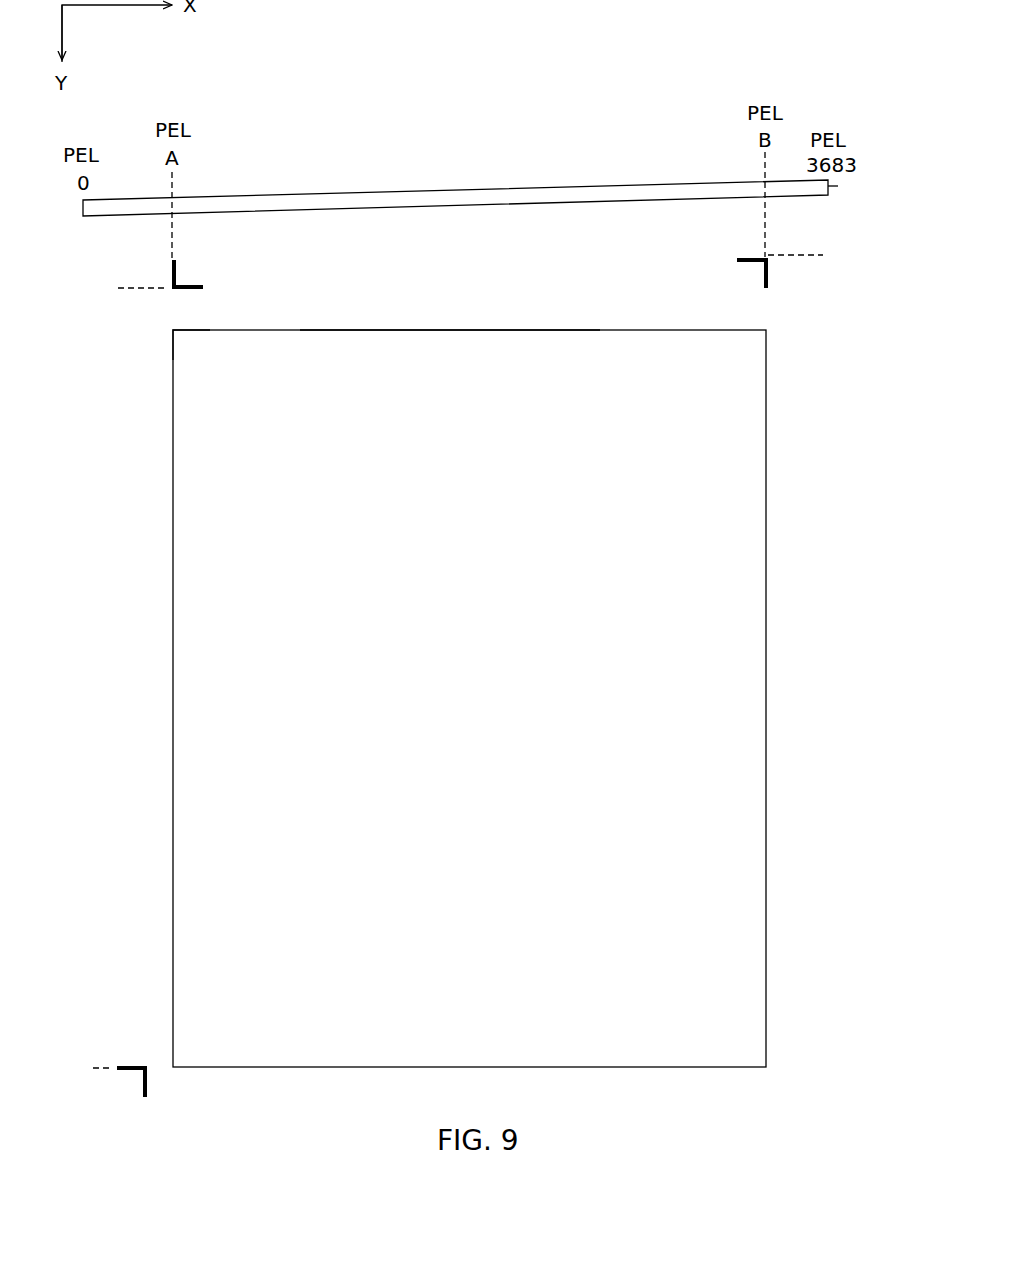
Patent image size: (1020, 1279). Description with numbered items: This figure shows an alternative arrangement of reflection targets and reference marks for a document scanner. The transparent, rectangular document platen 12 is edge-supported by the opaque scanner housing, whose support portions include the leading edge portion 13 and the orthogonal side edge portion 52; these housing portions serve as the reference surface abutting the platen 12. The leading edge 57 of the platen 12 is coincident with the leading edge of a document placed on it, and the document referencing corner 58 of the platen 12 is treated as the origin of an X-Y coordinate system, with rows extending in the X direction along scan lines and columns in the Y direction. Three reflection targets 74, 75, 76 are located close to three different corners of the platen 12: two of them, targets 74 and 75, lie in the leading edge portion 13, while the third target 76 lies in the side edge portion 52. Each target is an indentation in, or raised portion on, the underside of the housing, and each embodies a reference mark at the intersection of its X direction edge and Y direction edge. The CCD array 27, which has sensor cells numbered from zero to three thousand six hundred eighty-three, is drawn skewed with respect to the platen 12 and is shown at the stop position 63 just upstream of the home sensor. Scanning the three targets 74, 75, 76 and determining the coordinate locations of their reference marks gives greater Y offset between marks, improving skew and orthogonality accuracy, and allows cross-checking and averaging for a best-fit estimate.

The document platen 12 is at (484, 699).
The leading edge portion 13 is at (502, 280).
The CCD array 27 is at (310, 194).
The side edge portion 52 is at (105, 680).
The leading edge 57 is at (420, 331).
The document referencing corner 58 is at (177, 333).
The stop position 63 is at (838, 184).
The reflection target 74 is at (172, 275).
The reflection target 75 is at (770, 272).
The reflection target 76 is at (133, 1072).